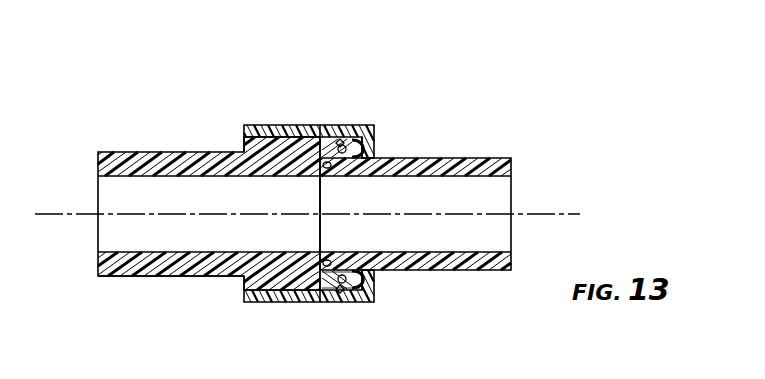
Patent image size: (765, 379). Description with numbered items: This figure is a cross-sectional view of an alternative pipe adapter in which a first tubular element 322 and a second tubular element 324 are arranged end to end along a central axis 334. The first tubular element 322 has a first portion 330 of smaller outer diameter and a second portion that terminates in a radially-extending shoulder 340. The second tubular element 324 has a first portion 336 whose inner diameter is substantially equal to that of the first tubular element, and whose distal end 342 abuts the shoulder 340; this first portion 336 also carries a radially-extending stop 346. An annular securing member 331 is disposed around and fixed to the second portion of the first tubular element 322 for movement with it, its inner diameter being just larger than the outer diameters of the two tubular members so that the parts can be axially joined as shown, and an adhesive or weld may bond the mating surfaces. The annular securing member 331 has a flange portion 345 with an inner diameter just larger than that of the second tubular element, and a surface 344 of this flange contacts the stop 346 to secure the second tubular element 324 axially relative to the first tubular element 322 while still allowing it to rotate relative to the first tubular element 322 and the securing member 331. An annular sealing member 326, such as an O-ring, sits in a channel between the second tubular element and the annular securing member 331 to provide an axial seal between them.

The first tubular element 322 is at (160, 151).
The second tubular element 324 is at (466, 157).
The annular sealing member 326 is at (363, 127).
The first portion 330 is at (183, 277).
The annular securing member 331 is at (304, 125).
The central axis 334 is at (548, 213).
The first portion 336 is at (356, 292).
The radially-extending shoulder 340 is at (250, 150).
The distal end 342 is at (320, 162).
The surface 344 is at (366, 159).
The flange portion 345 is at (370, 153).
The radially-extending stop 346 is at (370, 145).